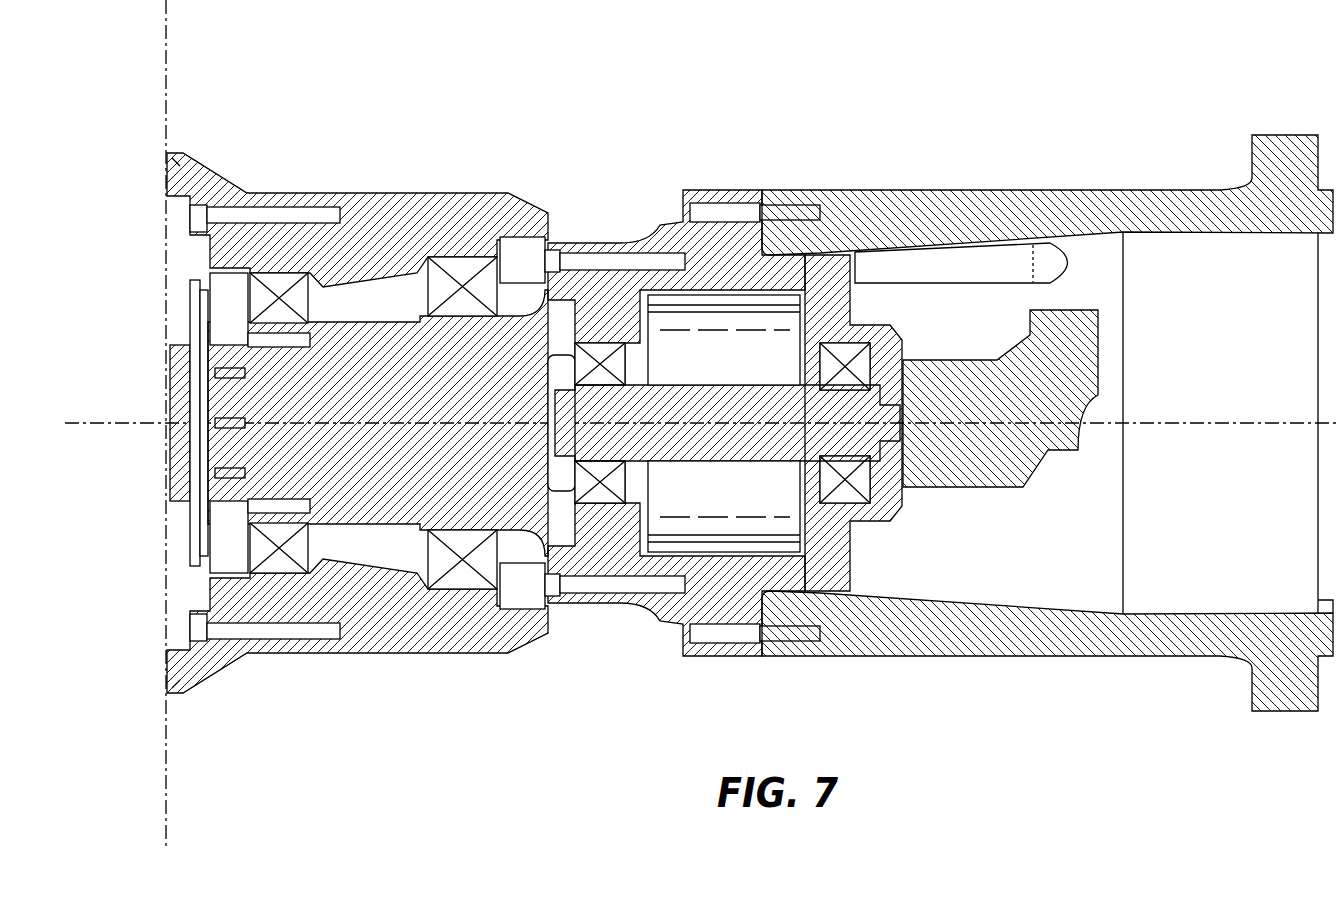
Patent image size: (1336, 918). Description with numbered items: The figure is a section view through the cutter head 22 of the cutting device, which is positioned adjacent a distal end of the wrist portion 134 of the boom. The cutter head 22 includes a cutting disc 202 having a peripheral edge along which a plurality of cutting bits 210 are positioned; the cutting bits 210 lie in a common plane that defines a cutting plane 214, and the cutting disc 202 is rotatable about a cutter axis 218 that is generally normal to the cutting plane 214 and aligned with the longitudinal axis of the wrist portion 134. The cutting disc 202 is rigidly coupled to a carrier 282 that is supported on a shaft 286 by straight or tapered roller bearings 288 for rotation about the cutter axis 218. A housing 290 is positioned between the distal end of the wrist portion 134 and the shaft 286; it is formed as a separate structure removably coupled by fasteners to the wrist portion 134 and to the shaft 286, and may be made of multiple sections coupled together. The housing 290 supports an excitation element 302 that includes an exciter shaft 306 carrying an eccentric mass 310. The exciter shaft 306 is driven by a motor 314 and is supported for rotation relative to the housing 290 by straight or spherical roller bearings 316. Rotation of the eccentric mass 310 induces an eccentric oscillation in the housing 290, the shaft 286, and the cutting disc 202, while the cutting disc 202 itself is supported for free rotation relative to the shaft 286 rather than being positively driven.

The cutter head 22 is at (541, 100).
The wrist portion 134 is at (1010, 210).
The cutting disc 202 is at (222, 148).
The cutting bits 210 is at (170, 157).
The cutting plane 214 is at (160, 778).
The cutter axis 218 is at (133, 418).
The carrier 282 is at (372, 213).
The shaft 286 is at (405, 375).
The roller bearings 288 is at (290, 560).
The housing 290 is at (628, 612).
The excitation element 302 is at (770, 284).
The exciter shaft 306 is at (700, 473).
The eccentric mass 310 is at (730, 313).
The motor 314 is at (1085, 360).
The roller bearings 316 is at (610, 343).